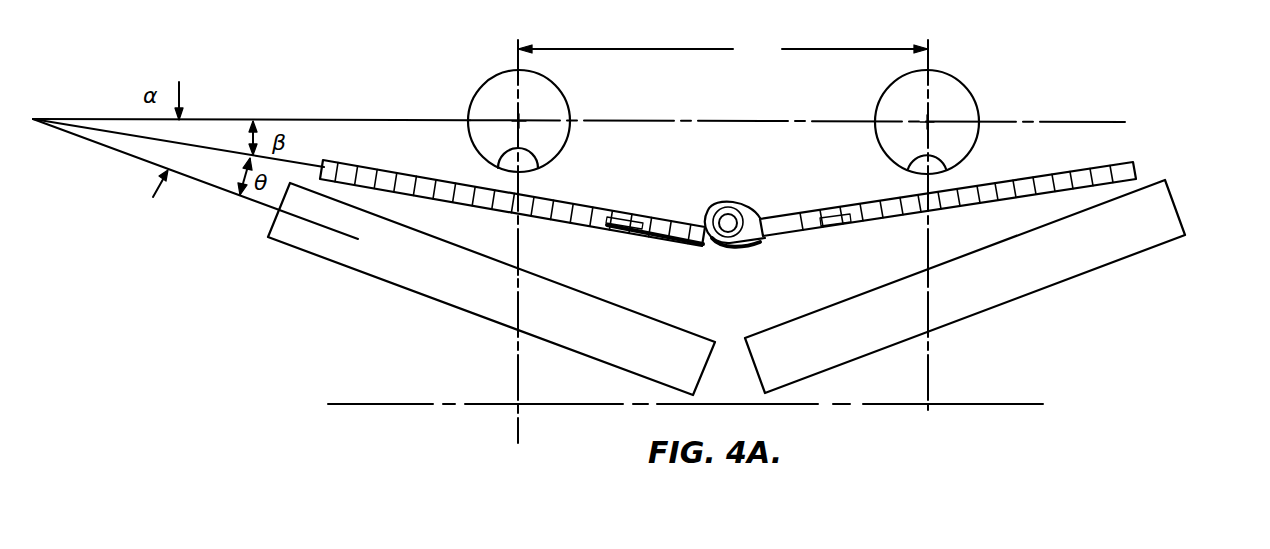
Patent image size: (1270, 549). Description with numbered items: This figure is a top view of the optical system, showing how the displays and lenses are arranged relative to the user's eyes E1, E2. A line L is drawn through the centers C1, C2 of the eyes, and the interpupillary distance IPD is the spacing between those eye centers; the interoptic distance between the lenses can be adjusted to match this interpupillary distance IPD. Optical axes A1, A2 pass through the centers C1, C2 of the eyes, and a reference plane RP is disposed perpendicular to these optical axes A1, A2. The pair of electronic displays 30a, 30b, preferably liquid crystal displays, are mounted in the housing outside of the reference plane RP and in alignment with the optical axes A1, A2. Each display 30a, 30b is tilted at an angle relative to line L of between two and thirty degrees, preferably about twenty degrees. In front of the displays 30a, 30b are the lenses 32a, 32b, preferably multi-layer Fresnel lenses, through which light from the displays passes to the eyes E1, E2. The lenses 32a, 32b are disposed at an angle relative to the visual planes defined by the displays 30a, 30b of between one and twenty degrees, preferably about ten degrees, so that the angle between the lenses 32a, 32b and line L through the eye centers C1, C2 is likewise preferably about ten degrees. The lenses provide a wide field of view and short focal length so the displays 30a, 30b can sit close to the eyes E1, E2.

The electronic display 30a is at (450, 287).
The electronic display 30b is at (982, 295).
The lens 32a is at (588, 203).
The lens 32b is at (1042, 172).
The optical axis A1 is at (520, 252).
The optical axis A2 is at (926, 256).
The center of eye C1 is at (518, 120).
The center of eye C2 is at (927, 121).
The eye E1 is at (556, 100).
The eye E2 is at (957, 98).
The line L is at (1067, 121).
The interpupillary distance IPD is at (723, 49).
The reference plane RP is at (679, 407).